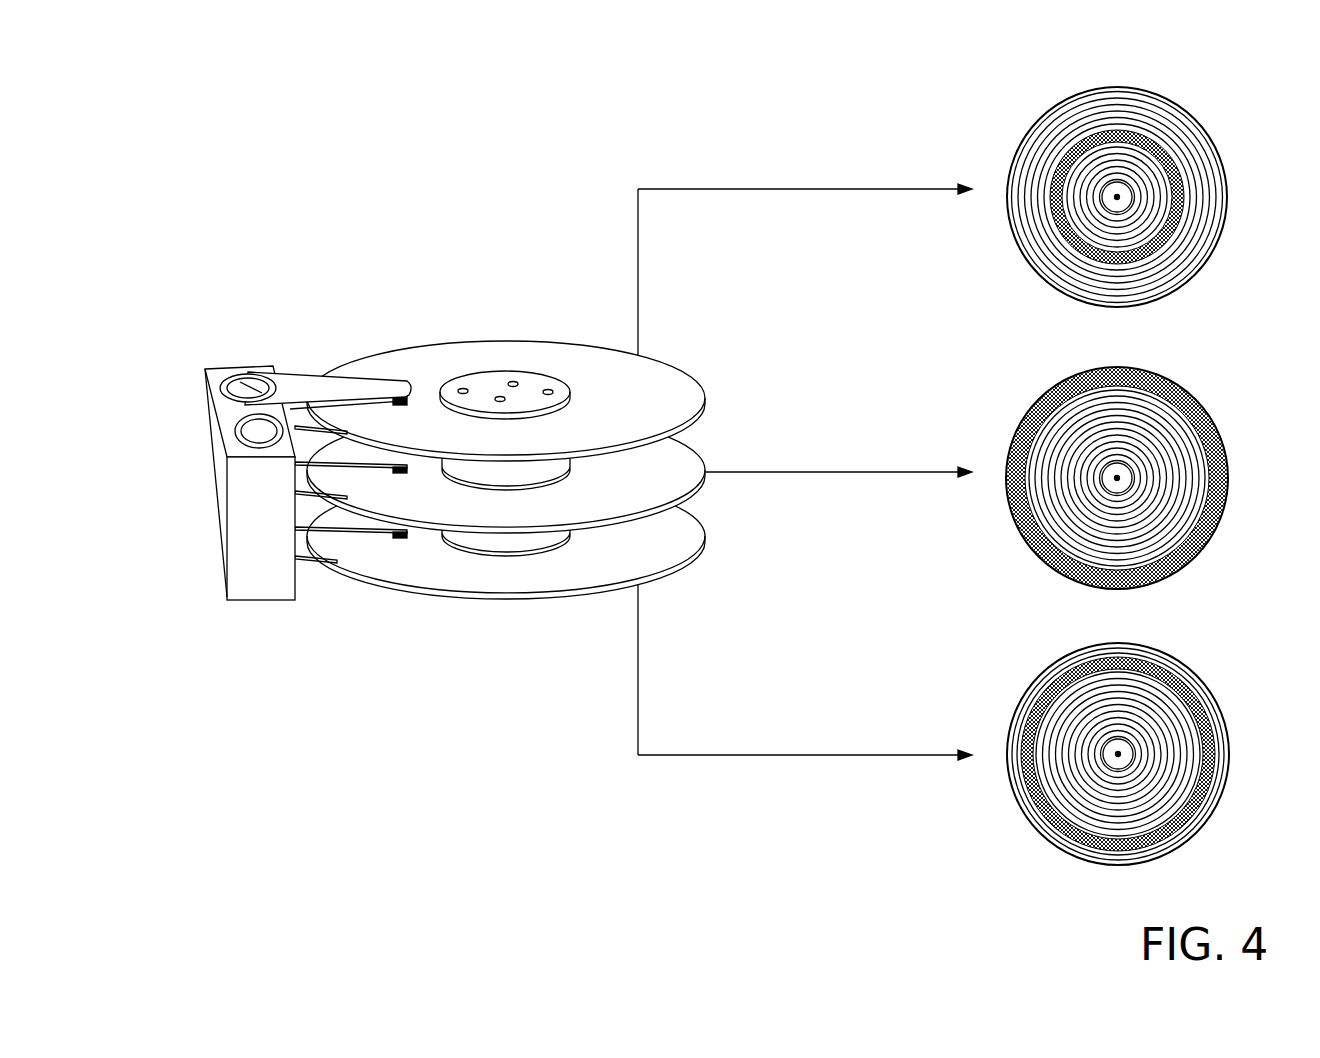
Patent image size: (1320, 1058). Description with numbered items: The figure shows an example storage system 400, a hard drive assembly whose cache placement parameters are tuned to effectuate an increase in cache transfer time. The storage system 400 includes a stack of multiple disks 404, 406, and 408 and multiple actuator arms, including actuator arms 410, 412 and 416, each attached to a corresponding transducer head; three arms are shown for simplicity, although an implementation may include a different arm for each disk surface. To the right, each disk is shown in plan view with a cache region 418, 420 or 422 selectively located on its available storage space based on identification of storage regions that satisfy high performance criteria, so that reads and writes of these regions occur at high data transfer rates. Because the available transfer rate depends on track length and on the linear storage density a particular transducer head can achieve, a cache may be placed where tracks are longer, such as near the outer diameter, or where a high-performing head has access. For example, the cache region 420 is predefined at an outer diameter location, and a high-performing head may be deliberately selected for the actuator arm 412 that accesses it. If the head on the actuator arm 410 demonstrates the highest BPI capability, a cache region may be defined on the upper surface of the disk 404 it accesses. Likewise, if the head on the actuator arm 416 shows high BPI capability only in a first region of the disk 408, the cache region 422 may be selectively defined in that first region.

The storage system 400 is at (208, 96).
The disk 404 is at (533, 446).
The disk 406 is at (533, 513).
The disk 408 is at (533, 581).
The actuator arm 410 is at (298, 392).
The actuator arm 412 is at (320, 450).
The actuator arm 416 is at (317, 518).
The cache region 418 is at (1165, 152).
The cache region 420 is at (1177, 383).
The cache region 422 is at (1142, 668).